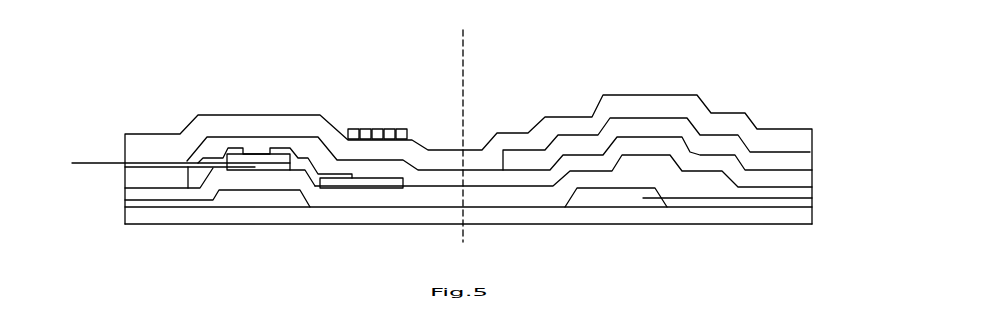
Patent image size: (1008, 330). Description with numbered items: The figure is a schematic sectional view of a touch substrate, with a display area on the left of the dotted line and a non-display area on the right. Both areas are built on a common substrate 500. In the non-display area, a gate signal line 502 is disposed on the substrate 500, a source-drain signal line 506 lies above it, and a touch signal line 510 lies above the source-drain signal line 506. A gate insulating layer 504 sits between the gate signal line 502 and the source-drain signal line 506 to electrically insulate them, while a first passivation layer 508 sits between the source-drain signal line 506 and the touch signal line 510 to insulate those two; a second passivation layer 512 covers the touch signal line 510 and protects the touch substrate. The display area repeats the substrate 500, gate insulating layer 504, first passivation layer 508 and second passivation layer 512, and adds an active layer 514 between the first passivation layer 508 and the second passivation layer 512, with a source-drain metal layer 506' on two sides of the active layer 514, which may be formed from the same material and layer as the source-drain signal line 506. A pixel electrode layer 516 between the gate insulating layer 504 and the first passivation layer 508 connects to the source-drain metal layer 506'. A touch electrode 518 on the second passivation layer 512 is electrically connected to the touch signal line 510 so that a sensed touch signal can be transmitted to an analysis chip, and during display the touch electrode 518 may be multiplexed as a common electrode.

The substrate 500 is at (135, 217).
The gate signal line 502 is at (135, 201).
The gate insulating layer 504 is at (130, 193).
The source-drain signal line 506 is at (496, 170).
The source-drain metal layer 506' is at (297, 107).
The first passivation layer 508 is at (135, 179).
The touch signal line 510 is at (725, 143).
The second passivation layer 512 is at (170, 148).
The active layer 514 is at (197, 163).
The pixel electrode layer 516 is at (333, 178).
The touch electrode 518 is at (378, 129).